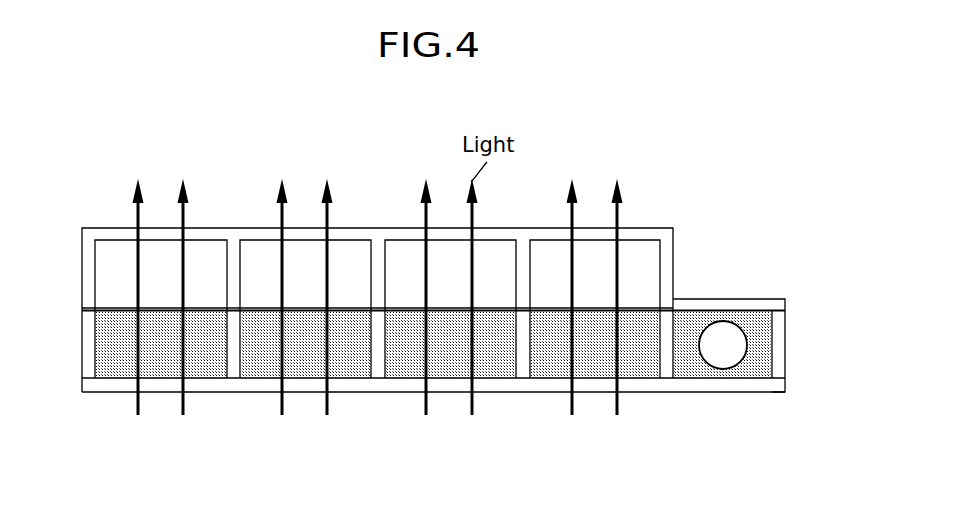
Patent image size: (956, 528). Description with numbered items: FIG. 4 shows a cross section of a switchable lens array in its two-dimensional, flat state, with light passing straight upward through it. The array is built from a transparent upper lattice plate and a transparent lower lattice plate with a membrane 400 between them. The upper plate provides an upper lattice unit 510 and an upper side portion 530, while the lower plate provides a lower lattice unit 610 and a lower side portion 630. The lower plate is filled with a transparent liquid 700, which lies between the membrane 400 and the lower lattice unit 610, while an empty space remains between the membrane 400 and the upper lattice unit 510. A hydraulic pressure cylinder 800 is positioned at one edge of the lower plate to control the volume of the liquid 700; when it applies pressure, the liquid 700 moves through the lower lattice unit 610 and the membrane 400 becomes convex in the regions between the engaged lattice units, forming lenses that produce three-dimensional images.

The membrane 400 is at (208, 307).
The upper lattice unit 510 is at (530, 275).
The upper side portion 530 is at (642, 235).
The lower lattice unit 610 is at (524, 349).
The lower side portion 630 is at (492, 386).
The liquid 700 is at (351, 358).
The hydraulic pressure cylinder 800 is at (723, 358).